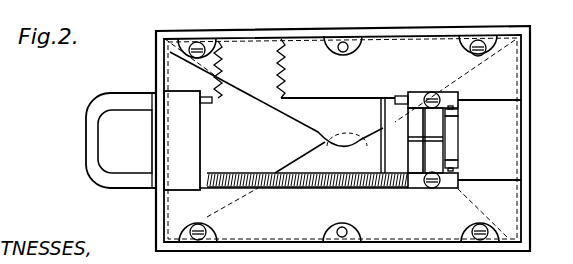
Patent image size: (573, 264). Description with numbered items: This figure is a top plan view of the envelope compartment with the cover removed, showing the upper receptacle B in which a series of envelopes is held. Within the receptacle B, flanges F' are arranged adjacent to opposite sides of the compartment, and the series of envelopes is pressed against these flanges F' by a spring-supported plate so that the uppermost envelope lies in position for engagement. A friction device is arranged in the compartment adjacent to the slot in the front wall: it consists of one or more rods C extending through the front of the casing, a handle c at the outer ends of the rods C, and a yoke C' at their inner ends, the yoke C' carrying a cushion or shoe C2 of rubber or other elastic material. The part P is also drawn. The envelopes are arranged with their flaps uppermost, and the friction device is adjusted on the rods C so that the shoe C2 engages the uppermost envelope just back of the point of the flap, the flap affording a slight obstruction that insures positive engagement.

The receptacle B is at (393, 238).
The handle c is at (98, 146).
The flanges F' is at (360, 131).
The rods C is at (289, 119).
The lever arm P is at (291, 157).
The cushion or shoe C2 is at (382, 155).
The yoke C' is at (417, 140).